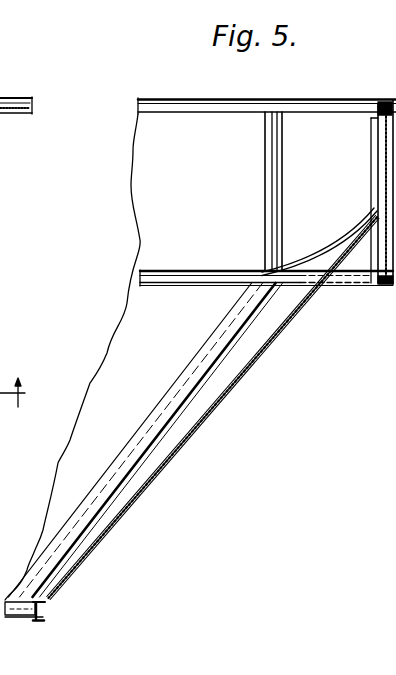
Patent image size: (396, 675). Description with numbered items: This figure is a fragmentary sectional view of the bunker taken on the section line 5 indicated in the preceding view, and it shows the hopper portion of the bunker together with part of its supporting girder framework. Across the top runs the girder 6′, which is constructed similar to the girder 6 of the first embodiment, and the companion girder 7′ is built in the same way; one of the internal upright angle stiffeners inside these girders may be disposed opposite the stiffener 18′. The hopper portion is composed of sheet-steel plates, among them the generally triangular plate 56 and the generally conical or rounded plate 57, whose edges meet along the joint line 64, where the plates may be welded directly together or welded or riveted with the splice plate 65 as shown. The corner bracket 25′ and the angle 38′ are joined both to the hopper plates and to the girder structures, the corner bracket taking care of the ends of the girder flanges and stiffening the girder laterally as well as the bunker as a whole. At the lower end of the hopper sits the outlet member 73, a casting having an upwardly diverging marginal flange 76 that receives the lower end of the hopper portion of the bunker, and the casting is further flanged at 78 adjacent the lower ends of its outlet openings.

The section line 5— 5 is at (0, 76).
The girder 6 is at (21, 392).
The girder 6′ is at (230, 112).
The girder 7′ is at (0, 183).
The stiffener 18′ is at (0, 243).
The corner bracket 25′ is at (325, 263).
The angle 38′ is at (178, 284).
The generally triangular plate 56 is at (118, 349).
The generally conical or rounded plate 57 is at (250, 363).
The joint line 64 is at (219, 353).
The splice plate 65 is at (187, 380).
The outlet member 73 is at (27, 620).
The upwardly diverging marginal flange 76 is at (45, 601).
The flange 78 is at (43, 621).